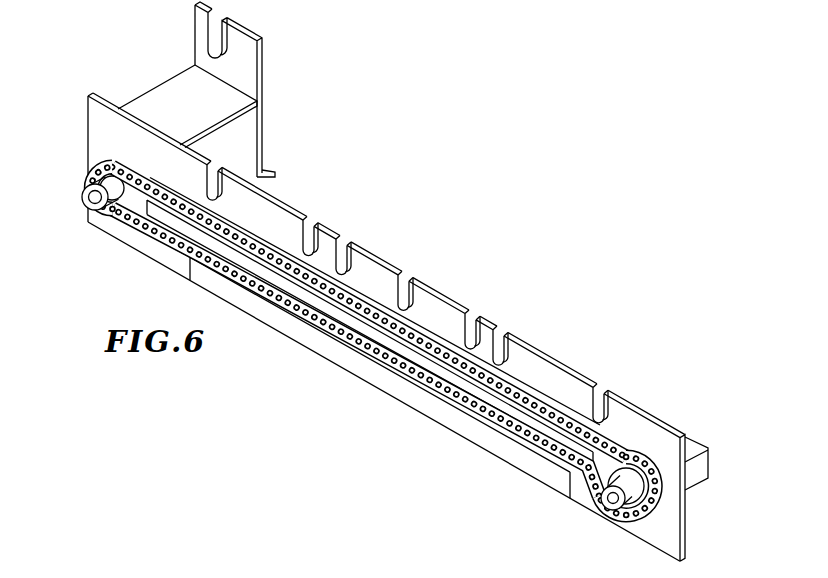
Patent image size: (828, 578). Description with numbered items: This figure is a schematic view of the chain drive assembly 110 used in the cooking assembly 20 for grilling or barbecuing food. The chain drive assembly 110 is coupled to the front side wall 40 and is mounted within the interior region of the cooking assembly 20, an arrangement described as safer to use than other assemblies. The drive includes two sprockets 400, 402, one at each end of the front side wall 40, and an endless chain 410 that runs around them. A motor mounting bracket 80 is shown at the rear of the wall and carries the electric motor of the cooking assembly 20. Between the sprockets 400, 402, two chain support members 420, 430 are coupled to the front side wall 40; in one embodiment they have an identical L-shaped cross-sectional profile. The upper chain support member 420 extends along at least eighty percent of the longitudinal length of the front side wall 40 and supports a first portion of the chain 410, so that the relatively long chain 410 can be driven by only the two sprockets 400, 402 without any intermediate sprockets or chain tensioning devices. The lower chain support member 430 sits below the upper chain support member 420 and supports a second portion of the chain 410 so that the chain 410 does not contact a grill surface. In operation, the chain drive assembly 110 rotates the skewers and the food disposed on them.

The cooking assembly 20 is at (374, 281).
The front side wall 40 is at (537, 348).
The motor mounting bracket 80 is at (261, 86).
The chain drive assembly 110 is at (370, 415).
The sprocket 400 is at (106, 207).
The sprocket 402 is at (635, 458).
The endless chain 410 is at (257, 240).
The upper chain support member 420 is at (538, 402).
The lower chain support member 430 is at (538, 470).